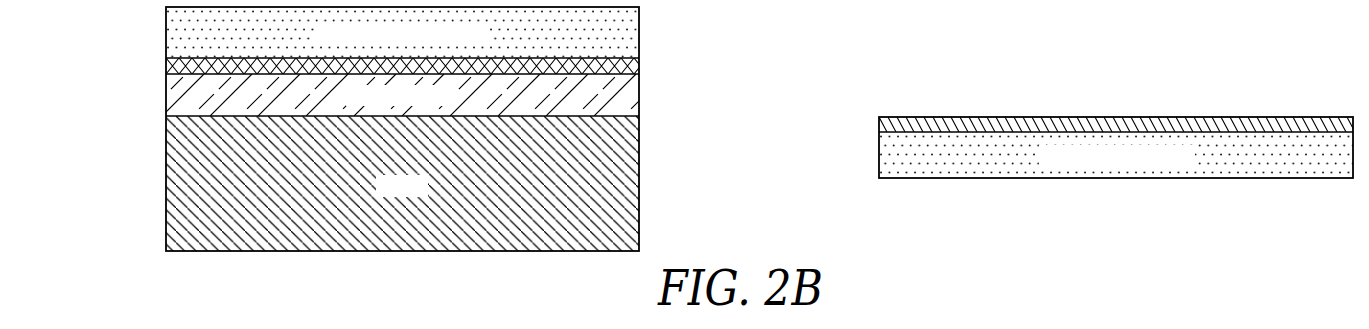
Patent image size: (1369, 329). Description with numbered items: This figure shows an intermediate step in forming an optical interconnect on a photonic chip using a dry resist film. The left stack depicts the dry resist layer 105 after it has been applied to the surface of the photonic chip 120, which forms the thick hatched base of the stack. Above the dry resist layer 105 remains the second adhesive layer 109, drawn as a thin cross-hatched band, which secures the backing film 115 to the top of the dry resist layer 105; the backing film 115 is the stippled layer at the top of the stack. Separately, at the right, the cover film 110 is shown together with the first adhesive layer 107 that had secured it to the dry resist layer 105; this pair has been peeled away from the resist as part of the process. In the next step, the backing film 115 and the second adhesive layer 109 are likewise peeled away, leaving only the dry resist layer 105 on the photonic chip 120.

The backing film 115 is at (627, 33).
The second adhesive layer 109 is at (172, 65).
The dry resist layer 105 is at (175, 97).
The photonic chip 120 is at (174, 195).
The first adhesive layer 107 is at (886, 124).
The cover film 110 is at (890, 156).